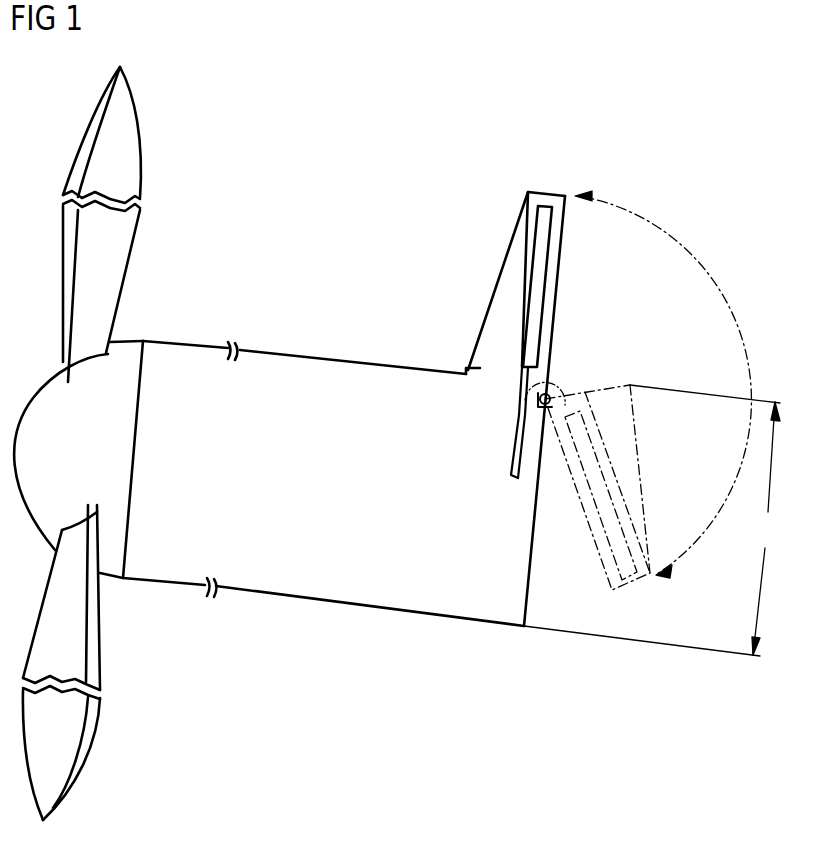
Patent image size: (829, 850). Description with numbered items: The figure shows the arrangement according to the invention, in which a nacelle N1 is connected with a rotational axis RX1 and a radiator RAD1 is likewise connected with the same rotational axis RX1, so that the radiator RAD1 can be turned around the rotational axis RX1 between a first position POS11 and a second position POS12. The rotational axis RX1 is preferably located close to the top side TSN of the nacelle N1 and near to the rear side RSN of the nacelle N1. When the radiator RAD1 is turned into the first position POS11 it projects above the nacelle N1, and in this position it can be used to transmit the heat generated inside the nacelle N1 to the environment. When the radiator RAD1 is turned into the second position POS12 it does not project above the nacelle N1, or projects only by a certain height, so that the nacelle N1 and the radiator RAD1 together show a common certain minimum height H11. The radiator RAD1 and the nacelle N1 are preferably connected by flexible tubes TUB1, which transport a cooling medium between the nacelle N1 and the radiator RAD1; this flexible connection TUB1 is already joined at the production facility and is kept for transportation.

The top side of the nacelle TSN is at (278, 352).
The nacelle N1 is at (380, 375).
The rear side of the nacelle RSN is at (531, 563).
The radiator RAD1 is at (542, 206).
The flexible tubes TUB1 is at (560, 378).
The rotational axis RX1 is at (553, 410).
The first position POS11 is at (592, 197).
The second position POS12 is at (670, 570).
The minimum height H11 is at (654, 520).